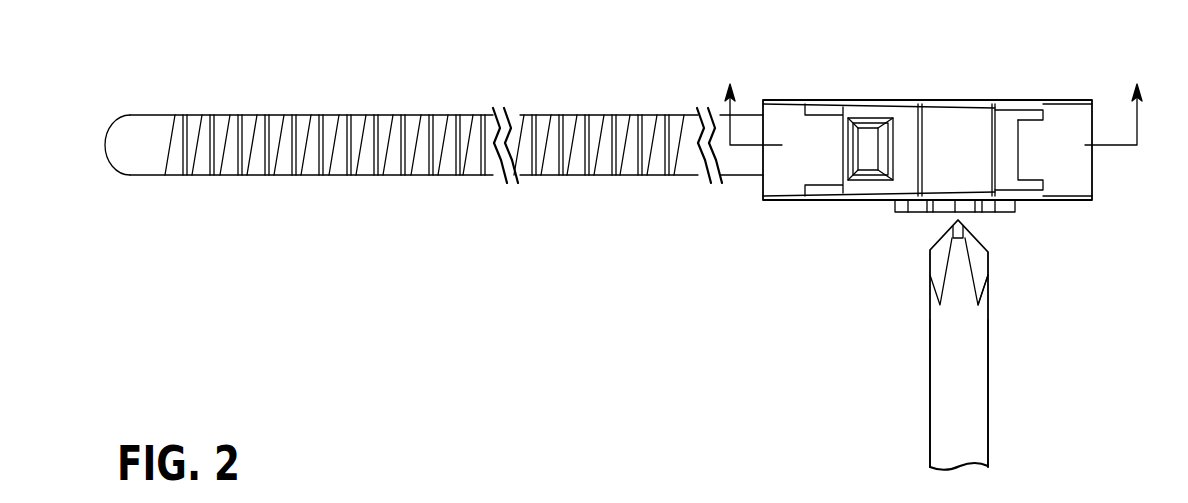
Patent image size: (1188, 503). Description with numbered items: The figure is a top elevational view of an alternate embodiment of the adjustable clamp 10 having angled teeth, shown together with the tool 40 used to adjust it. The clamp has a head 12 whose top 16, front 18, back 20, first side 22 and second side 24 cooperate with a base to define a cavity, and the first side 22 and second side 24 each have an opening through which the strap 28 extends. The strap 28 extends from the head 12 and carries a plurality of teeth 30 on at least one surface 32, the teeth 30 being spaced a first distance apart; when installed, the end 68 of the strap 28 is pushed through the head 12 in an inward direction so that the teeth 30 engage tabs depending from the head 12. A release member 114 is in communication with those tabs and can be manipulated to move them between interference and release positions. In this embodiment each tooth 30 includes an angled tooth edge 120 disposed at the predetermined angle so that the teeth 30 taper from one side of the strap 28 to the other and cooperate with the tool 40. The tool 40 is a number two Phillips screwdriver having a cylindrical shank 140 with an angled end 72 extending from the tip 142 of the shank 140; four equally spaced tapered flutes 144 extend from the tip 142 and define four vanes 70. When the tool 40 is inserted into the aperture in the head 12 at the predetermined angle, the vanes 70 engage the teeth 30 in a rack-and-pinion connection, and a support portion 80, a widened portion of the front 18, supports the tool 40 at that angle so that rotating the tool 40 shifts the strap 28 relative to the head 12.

The adjustable clamp 10 is at (228, 70).
The head 12 is at (828, 100).
The top 16 is at (950, 120).
The front 18 is at (855, 200).
The back 20 is at (1003, 105).
The first side 22 is at (905, 118).
The second side 24 is at (1003, 163).
The strap 28 is at (410, 115).
The teeth 30 is at (580, 160).
The surface 32 is at (690, 158).
The tool 40 is at (1018, 416).
The end 68 is at (103, 143).
The vanes 70 is at (955, 268).
The end 72 is at (982, 300).
The support portion 80 is at (908, 201).
The release member 114 is at (863, 122).
The angled tooth edge 120 is at (455, 172).
The shank 140 is at (950, 395).
The tip 142 is at (960, 218).
The tapered flutes 144 is at (940, 258).